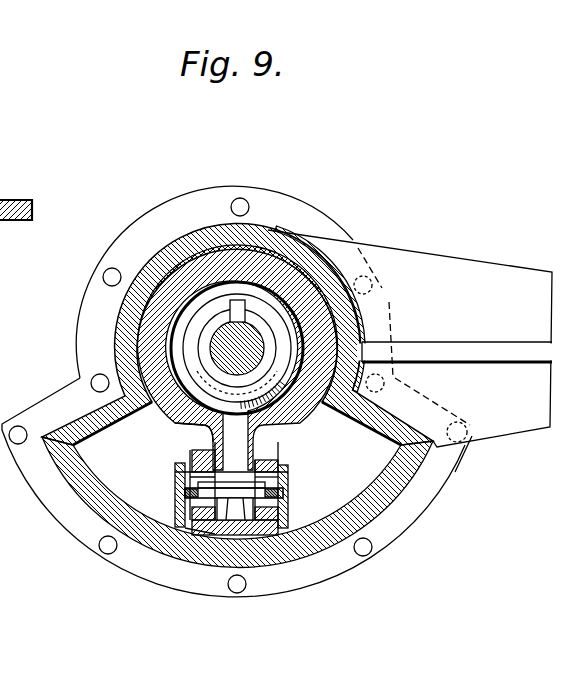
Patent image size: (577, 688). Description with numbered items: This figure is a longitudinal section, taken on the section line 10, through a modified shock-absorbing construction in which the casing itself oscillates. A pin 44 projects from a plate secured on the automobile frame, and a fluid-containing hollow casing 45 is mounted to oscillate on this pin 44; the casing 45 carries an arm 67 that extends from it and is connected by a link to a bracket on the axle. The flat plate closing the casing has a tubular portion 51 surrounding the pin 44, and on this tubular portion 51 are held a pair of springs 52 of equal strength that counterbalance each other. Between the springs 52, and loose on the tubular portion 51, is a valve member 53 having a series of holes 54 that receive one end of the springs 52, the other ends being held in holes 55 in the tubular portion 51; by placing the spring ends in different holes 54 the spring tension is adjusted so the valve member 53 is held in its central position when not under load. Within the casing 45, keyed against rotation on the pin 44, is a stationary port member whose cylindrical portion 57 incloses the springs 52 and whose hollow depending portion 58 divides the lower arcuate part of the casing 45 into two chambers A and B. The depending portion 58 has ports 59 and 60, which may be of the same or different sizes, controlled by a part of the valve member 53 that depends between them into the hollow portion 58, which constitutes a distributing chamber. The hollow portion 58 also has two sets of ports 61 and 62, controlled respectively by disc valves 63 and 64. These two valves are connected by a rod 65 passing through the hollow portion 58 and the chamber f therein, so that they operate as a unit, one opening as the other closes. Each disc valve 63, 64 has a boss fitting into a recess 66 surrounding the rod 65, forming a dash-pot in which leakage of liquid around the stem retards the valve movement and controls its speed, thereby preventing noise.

The section line 10 is at (236, 171).
The pin 44 is at (258, 340).
The hollow casing 45 is at (87, 493).
The tubular portion 51 is at (143, 316).
The springs 52 is at (210, 331).
The valve member 53 is at (178, 366).
The holes 54 is at (157, 420).
The holes 55 is at (247, 314).
The cylindrical portion 57 is at (175, 282).
The hollow depending portion 58 is at (200, 530).
The port 59 is at (200, 446).
The port 60 is at (268, 444).
The set of ports 61 is at (187, 471).
The set of ports 62 is at (280, 478).
The disc valve 63 is at (180, 489).
The disc valve 64 is at (283, 500).
The rod 65 is at (273, 533).
The recess 66 is at (262, 480).
The arm 67 is at (499, 424).
The chamber f is at (222, 512).
The chamber A is at (111, 461).
The chamber B is at (357, 458).